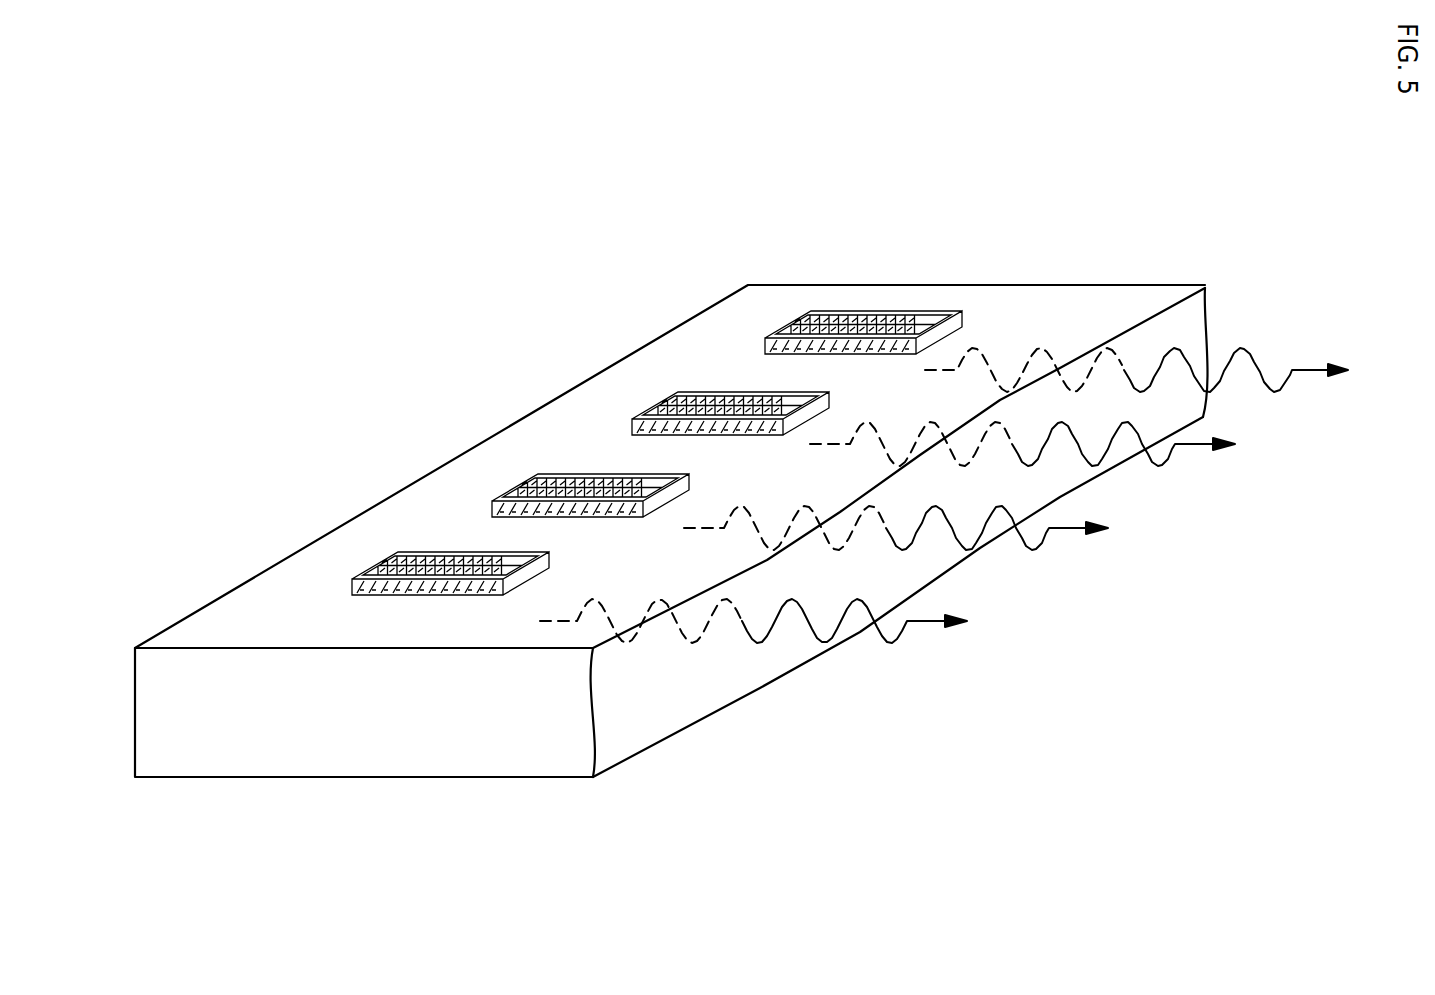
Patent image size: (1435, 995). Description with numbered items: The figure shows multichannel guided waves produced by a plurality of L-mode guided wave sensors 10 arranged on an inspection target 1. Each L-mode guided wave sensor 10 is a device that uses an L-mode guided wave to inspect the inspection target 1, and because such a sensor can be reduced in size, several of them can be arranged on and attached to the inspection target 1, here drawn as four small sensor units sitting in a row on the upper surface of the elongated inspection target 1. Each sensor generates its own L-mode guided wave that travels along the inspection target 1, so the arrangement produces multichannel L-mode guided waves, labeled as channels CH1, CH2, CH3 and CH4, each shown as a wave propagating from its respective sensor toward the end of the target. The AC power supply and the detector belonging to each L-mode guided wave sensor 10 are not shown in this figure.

The inspection target 1 is at (1058, 286).
The L-mode guided wave sensor 10 is at (636, 410).
The channel CH1 is at (845, 326).
The channel CH2 is at (711, 410).
The channel CH3 is at (572, 490).
The channel CH4 is at (387, 556).